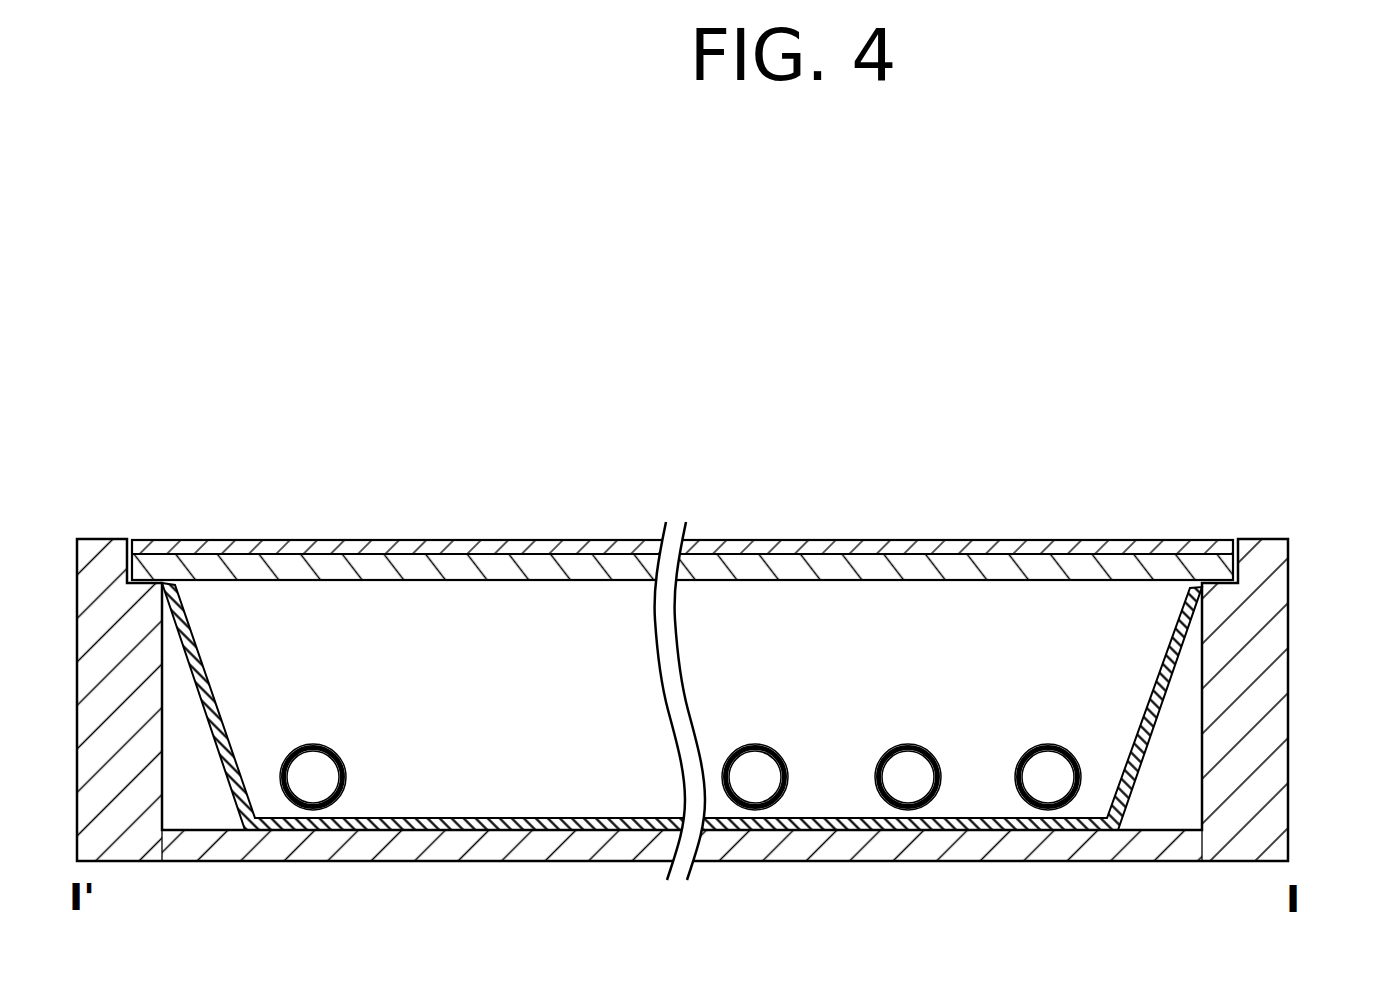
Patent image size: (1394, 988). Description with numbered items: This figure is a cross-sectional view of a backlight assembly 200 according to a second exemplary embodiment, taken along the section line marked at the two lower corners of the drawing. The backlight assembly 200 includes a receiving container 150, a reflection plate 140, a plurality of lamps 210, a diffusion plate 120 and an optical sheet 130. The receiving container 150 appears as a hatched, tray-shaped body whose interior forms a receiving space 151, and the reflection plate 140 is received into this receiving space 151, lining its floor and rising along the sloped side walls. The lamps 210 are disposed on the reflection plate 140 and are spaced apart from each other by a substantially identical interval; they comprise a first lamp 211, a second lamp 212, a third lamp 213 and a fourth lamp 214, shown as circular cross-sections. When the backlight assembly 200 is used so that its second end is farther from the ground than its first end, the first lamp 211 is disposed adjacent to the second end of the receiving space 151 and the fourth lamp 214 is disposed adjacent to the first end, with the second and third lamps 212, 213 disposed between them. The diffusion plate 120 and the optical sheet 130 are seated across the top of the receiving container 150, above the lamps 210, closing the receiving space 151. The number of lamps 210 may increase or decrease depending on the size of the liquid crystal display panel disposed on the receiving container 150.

The backlight assembly 200 is at (708, 380).
The diffusion plate 120 is at (1165, 570).
The optical sheet 130 is at (1084, 555).
The reflection plate 140 is at (1175, 648).
The receiving container 150 is at (1258, 777).
The receiving space 151 is at (980, 614).
The lamps 210 is at (832, 714).
The first lamp 211 is at (1048, 744).
The second lamp 212 is at (908, 744).
The third lamp 213 is at (757, 744).
The fourth lamp 214 is at (314, 744).